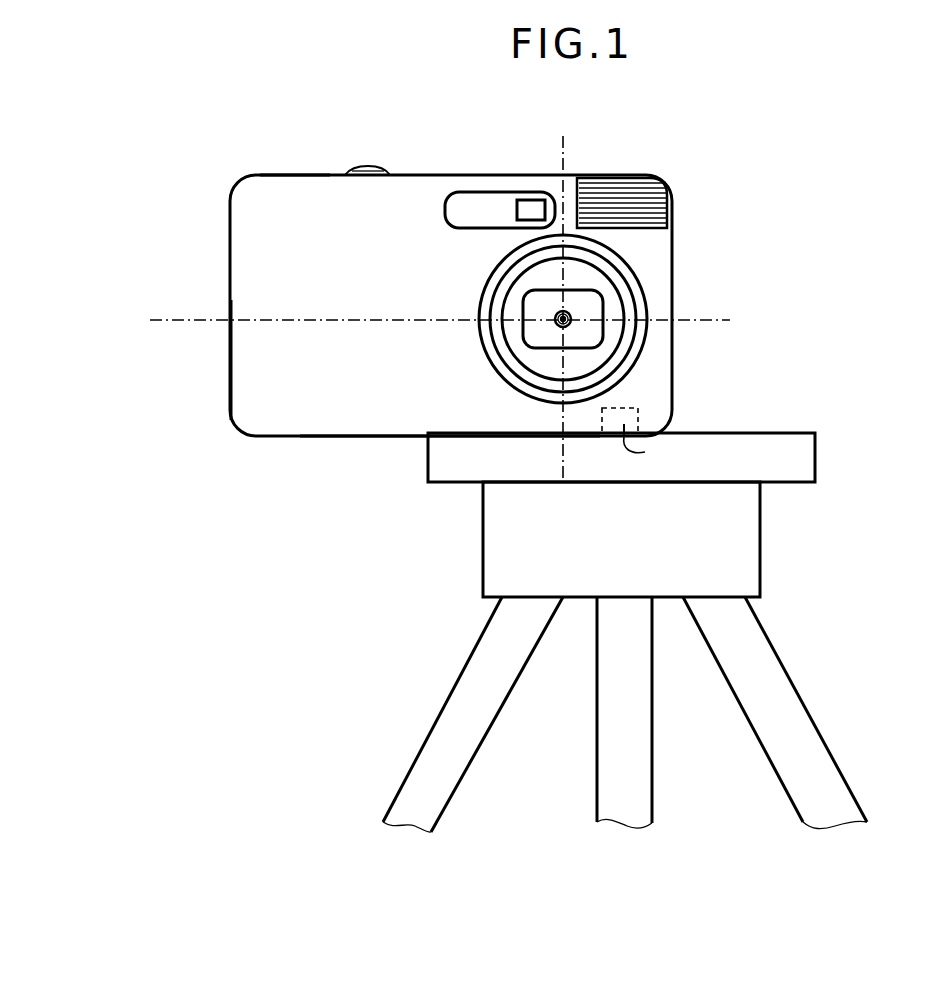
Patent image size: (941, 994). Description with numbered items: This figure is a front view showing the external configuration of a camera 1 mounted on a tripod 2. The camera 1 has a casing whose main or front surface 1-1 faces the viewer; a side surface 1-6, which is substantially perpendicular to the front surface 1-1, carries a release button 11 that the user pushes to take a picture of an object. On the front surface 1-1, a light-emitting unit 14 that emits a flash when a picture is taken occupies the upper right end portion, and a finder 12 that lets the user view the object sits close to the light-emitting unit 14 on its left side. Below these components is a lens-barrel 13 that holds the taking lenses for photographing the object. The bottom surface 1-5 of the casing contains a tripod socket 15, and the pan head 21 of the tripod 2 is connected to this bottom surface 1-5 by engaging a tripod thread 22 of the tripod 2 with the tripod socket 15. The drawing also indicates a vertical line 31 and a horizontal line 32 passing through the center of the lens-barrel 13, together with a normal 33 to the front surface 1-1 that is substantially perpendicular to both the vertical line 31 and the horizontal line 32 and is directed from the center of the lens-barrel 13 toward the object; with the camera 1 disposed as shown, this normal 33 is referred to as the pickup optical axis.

The camera 1 is at (299, 415).
The front surface 1-1 is at (258, 358).
The bottom surface 1-5 is at (372, 438).
The side surface 1-6 is at (272, 172).
The release button 11 is at (370, 165).
The finder 12 is at (527, 200).
The lens-barrel 13 is at (633, 277).
The light-emitting unit 14 is at (620, 197).
The tripod socket 15 is at (640, 416).
The tripod 2 is at (745, 538).
The pan head 21 is at (797, 458).
The tripod thread 22 is at (645, 452).
The vertical line 31 is at (564, 293).
The horizontal line 32 is at (457, 319).
The normal 33 is at (555, 326).